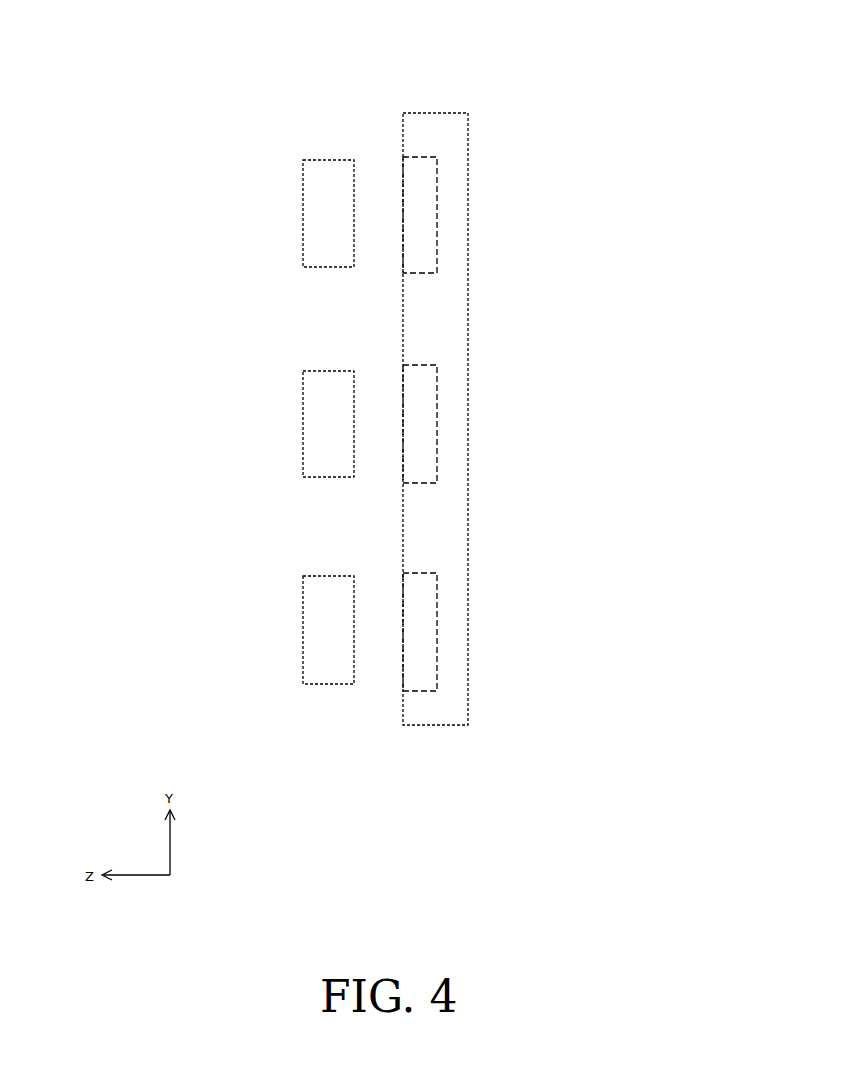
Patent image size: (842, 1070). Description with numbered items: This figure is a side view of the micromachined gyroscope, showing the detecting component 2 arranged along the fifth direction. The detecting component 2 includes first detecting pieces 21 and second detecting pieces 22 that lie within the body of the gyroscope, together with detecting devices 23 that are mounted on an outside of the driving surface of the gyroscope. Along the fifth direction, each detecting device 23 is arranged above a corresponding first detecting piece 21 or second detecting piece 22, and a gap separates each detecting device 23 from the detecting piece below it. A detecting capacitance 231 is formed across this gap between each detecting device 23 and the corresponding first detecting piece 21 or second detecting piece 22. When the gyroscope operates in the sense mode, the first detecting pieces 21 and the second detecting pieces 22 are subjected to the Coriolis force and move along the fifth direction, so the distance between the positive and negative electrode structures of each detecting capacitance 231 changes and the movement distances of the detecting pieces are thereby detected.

The detecting component 2 is at (570, 163).
The first detecting piece 21 is at (425, 422).
The second detecting piece 22 is at (425, 257).
The detecting device 23 is at (318, 200).
The detecting capacitance 231 is at (377, 167).